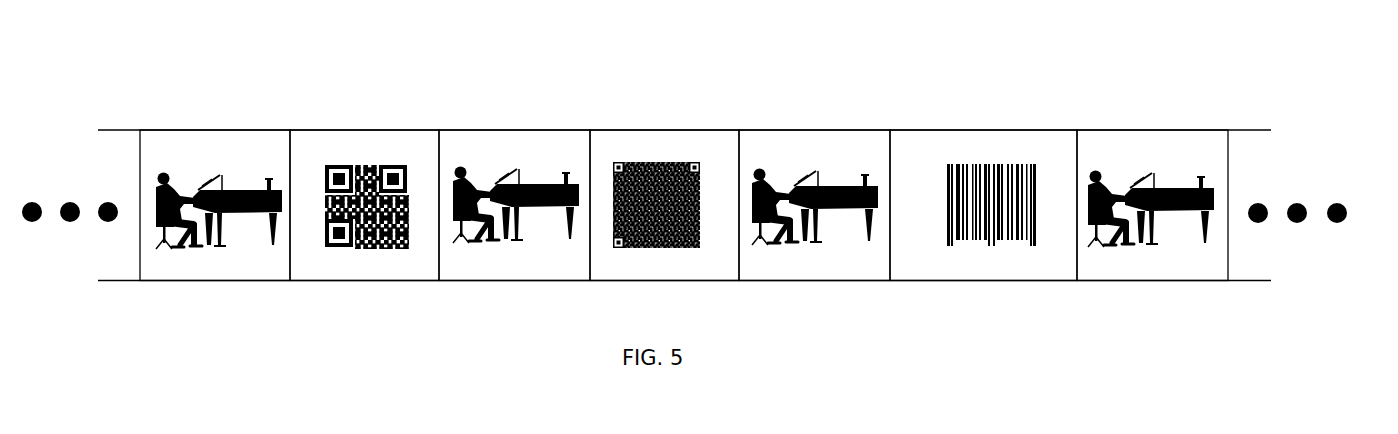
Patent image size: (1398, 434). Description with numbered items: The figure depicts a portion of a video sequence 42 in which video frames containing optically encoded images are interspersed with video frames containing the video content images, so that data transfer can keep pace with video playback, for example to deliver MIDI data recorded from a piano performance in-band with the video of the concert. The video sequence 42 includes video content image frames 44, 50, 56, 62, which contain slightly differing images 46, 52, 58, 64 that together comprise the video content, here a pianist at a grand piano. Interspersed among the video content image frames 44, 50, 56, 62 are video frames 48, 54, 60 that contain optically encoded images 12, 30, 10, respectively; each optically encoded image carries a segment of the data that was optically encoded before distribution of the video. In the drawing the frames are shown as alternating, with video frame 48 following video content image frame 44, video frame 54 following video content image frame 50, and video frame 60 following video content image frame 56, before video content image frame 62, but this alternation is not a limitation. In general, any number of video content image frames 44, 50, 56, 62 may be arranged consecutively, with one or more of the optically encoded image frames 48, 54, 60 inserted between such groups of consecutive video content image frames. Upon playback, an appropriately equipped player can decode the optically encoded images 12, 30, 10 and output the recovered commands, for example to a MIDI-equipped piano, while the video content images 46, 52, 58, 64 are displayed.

The video sequence 42 is at (1328, 86).
The video content image frame 44 is at (193, 128).
The image 46 is at (238, 157).
The video frame 48 is at (325, 128).
The optically encoded image 12 is at (380, 160).
The video content image frame 50 is at (467, 128).
The image 52 is at (532, 160).
The video frame 54 is at (619, 128).
The optically encoded image 30 is at (673, 155).
The video content image frame 56 is at (765, 128).
The image 58 is at (837, 155).
The video frame 60 is at (952, 128).
The optically encoded image 10 is at (1027, 157).
The video content image frame 62 is at (1097, 128).
The image 64 is at (1168, 158).